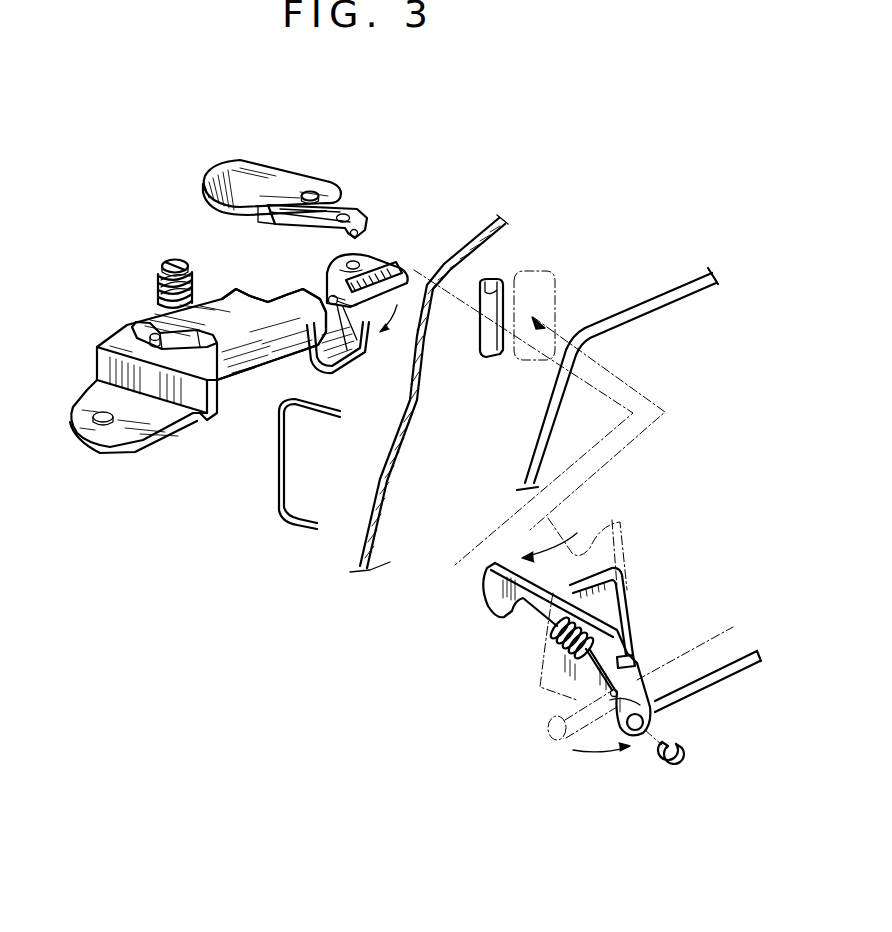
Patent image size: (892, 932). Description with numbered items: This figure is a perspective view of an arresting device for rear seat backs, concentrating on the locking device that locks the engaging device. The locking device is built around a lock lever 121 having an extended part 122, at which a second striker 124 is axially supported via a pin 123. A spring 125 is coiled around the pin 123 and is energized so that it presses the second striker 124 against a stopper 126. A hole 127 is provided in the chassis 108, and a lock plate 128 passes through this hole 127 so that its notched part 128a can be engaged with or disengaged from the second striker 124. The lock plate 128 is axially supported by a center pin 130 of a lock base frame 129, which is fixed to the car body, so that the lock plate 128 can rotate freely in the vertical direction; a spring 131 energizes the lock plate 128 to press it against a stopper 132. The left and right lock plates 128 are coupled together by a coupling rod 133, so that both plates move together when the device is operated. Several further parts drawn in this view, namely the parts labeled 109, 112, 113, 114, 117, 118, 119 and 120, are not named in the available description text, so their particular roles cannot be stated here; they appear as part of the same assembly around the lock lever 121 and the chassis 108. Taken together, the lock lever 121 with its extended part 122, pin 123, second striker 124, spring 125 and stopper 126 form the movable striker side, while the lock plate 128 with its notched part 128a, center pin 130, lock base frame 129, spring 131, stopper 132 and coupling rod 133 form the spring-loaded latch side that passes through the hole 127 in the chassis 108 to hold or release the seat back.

The chassis 108 is at (616, 301).
The clip 109 is at (280, 471).
The mounting lobe 112 is at (126, 430).
The screw 113 is at (164, 263).
The spring 114 is at (195, 278).
The cover plate 117 is at (271, 170).
The retaining lip 118 is at (210, 340).
The flange 119 is at (175, 378).
The bracket 120 is at (152, 456).
The lock lever 121 is at (258, 356).
The extended part 122 is at (366, 262).
The pin 123 is at (353, 356).
The second striker 124 is at (414, 270).
The spring 125 is at (362, 296).
The stopper 126 is at (348, 304).
The hole 127 is at (491, 285).
The lock plate 128 is at (640, 665).
The notched part 128a is at (517, 613).
The lock base frame 129 is at (627, 577).
The center pin 130 is at (558, 637).
The spring 131 is at (597, 667).
The stopper 132 is at (632, 654).
The coupling rod 133 is at (686, 697).